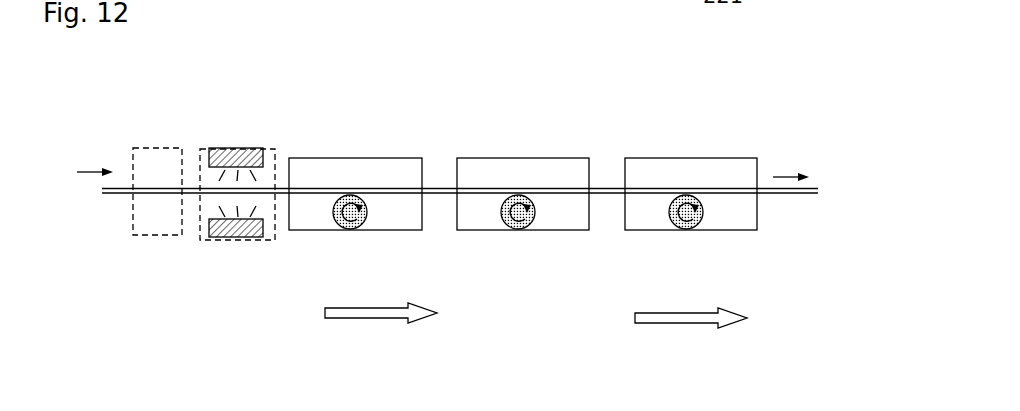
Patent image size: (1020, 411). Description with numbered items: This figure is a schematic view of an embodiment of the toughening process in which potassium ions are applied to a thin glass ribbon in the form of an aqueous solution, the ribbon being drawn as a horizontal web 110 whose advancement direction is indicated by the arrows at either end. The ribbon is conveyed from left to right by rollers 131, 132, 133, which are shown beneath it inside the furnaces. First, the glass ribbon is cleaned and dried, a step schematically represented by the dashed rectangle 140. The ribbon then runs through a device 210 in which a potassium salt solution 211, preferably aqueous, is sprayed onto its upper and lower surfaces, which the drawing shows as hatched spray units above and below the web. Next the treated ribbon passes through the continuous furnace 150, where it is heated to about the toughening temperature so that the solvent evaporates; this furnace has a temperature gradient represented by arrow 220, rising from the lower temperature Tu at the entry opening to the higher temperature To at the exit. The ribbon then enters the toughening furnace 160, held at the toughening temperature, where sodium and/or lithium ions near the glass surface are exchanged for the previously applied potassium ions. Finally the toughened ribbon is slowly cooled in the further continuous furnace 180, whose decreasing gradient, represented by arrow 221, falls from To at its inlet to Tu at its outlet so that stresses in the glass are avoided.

The web / substrate 110 is at (279, 191).
The rectangle 140 is at (168, 127).
The device 210 is at (247, 150).
The potassium salt solution 211 is at (237, 249).
The continuous furnace 150 is at (322, 158).
The toughening furnace 160 is at (556, 158).
The further continuous furnace 180 is at (665, 158).
The roller 131 is at (350, 228).
The roller 132 is at (527, 227).
The roller 133 is at (675, 227).
The arrow 220 is at (360, 318).
The arrow 221 is at (672, 327).